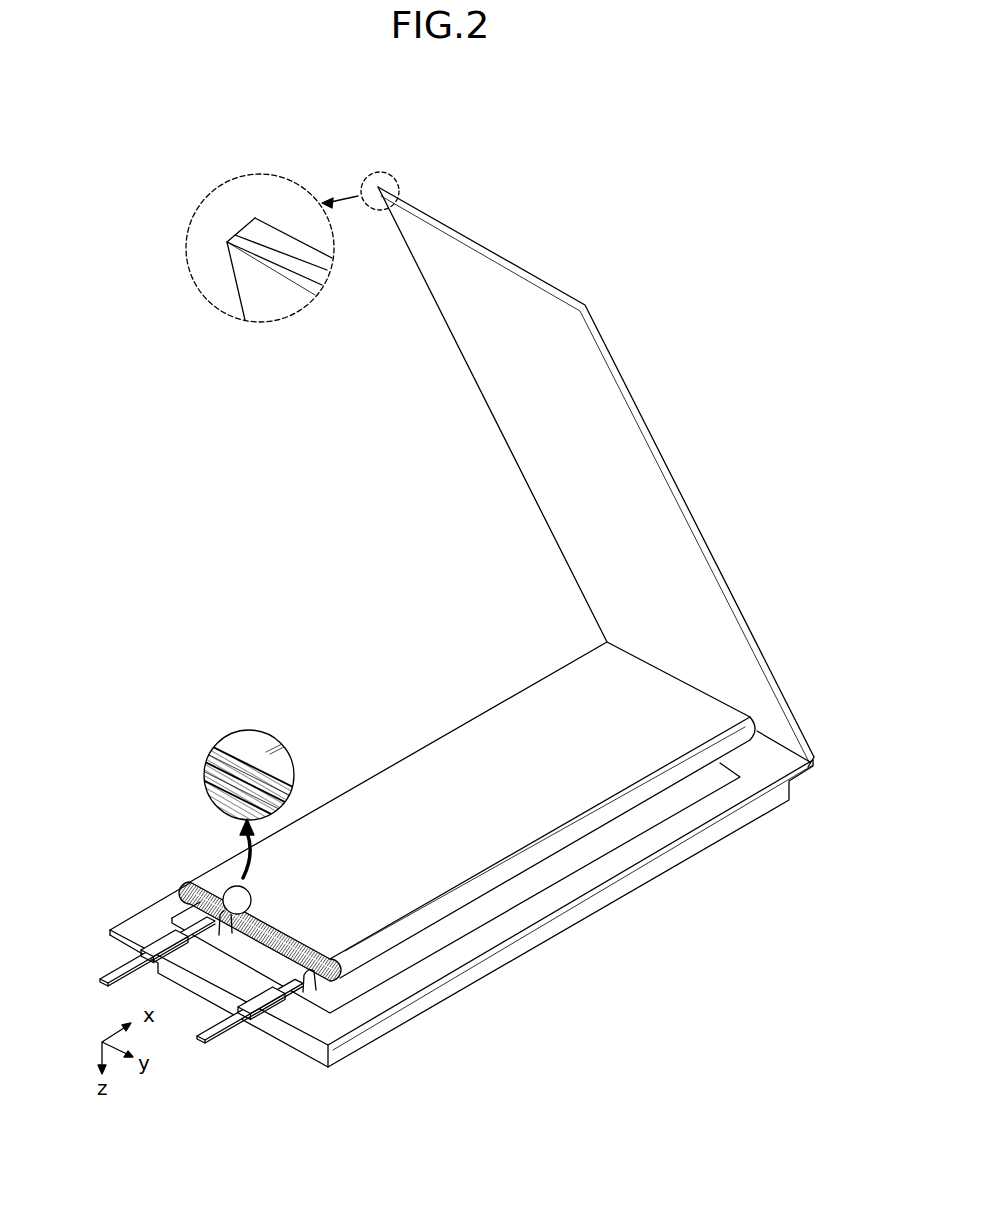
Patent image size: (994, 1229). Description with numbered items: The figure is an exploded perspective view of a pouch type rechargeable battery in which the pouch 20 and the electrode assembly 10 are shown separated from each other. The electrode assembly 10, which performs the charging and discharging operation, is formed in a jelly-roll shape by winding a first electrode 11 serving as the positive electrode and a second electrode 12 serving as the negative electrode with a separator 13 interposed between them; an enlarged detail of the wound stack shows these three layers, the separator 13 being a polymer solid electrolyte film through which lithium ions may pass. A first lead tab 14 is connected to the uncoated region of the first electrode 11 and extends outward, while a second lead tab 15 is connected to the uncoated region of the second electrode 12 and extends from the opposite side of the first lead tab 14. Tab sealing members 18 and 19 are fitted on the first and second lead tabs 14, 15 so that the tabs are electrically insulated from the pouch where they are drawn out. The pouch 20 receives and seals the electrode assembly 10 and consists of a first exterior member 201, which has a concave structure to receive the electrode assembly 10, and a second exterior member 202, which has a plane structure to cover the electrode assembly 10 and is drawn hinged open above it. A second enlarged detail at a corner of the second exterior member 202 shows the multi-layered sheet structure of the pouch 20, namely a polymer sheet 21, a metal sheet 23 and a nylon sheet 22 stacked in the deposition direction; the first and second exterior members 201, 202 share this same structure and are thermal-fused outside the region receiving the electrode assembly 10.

The electrode assembly 10 is at (669, 658).
The first electrode 11 is at (205, 765).
The second electrode 12 is at (212, 747).
The separator 13 is at (282, 775).
The first lead tab 14 is at (118, 970).
The second lead tab 15 is at (213, 1046).
The tab sealing member 18 is at (167, 942).
The tab sealing member 19 is at (270, 1005).
The pouch 20 is at (303, 135).
The polymer sheet 21 is at (252, 250).
The nylon sheet 22 is at (295, 243).
The metal sheet 23 is at (273, 247).
The first exterior member 201 is at (417, 992).
The second exterior member 202 is at (503, 408).